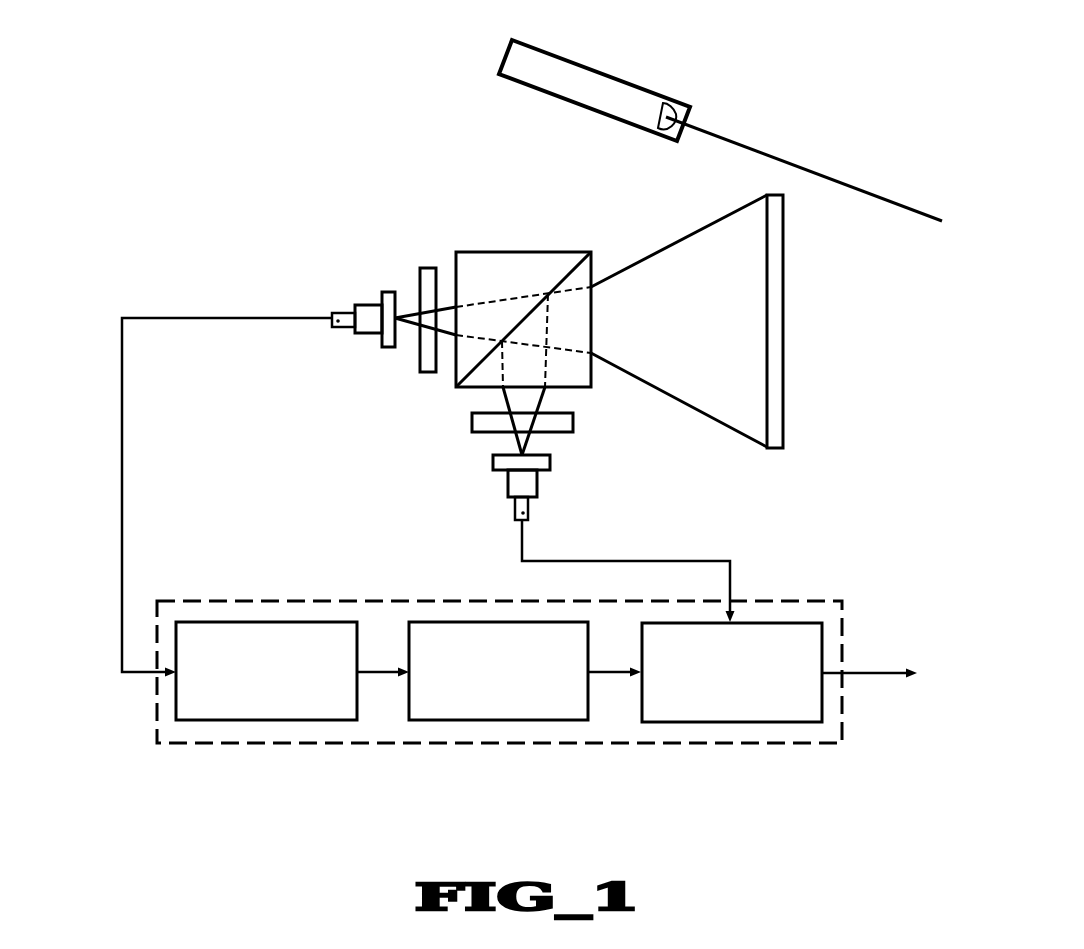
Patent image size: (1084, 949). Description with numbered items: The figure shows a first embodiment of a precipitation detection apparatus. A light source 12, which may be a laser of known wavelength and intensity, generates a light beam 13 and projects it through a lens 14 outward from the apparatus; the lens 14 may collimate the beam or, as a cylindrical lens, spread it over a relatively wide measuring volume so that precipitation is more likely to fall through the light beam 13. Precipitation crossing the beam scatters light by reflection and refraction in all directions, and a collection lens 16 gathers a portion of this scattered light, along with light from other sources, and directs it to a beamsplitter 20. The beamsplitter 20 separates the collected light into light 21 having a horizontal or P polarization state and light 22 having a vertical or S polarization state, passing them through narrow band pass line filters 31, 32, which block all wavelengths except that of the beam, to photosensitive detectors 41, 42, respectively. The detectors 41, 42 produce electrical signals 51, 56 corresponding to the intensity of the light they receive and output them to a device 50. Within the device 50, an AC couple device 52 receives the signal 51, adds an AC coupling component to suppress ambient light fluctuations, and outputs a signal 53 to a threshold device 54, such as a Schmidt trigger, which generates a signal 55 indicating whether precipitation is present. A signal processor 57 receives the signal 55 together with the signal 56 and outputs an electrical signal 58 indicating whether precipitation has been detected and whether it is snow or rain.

The light source 12 is at (557, 75).
The light beam 13 is at (887, 200).
The lens 14 is at (664, 113).
The collection lens 16 is at (775, 262).
The beamsplitter 20 is at (510, 263).
The light (P polarization) 21 is at (412, 323).
The light (S polarization) 22 is at (515, 438).
The narrow band pass line filter 31 is at (425, 275).
The narrow band pass line filter 32 is at (565, 422).
The photosensitive detector 41 is at (363, 305).
The photosensitive detector 42 is at (528, 487).
The device 50 is at (155, 698).
The electrical signal 51 is at (120, 507).
The AC couple device 52 is at (285, 620).
The signal 53 is at (383, 670).
The threshold device 54 is at (502, 720).
The electrical signal 55 is at (608, 673).
The electrical signal 56 is at (678, 560).
The signal processor 57 is at (807, 623).
The electrical signal 58 is at (865, 672).